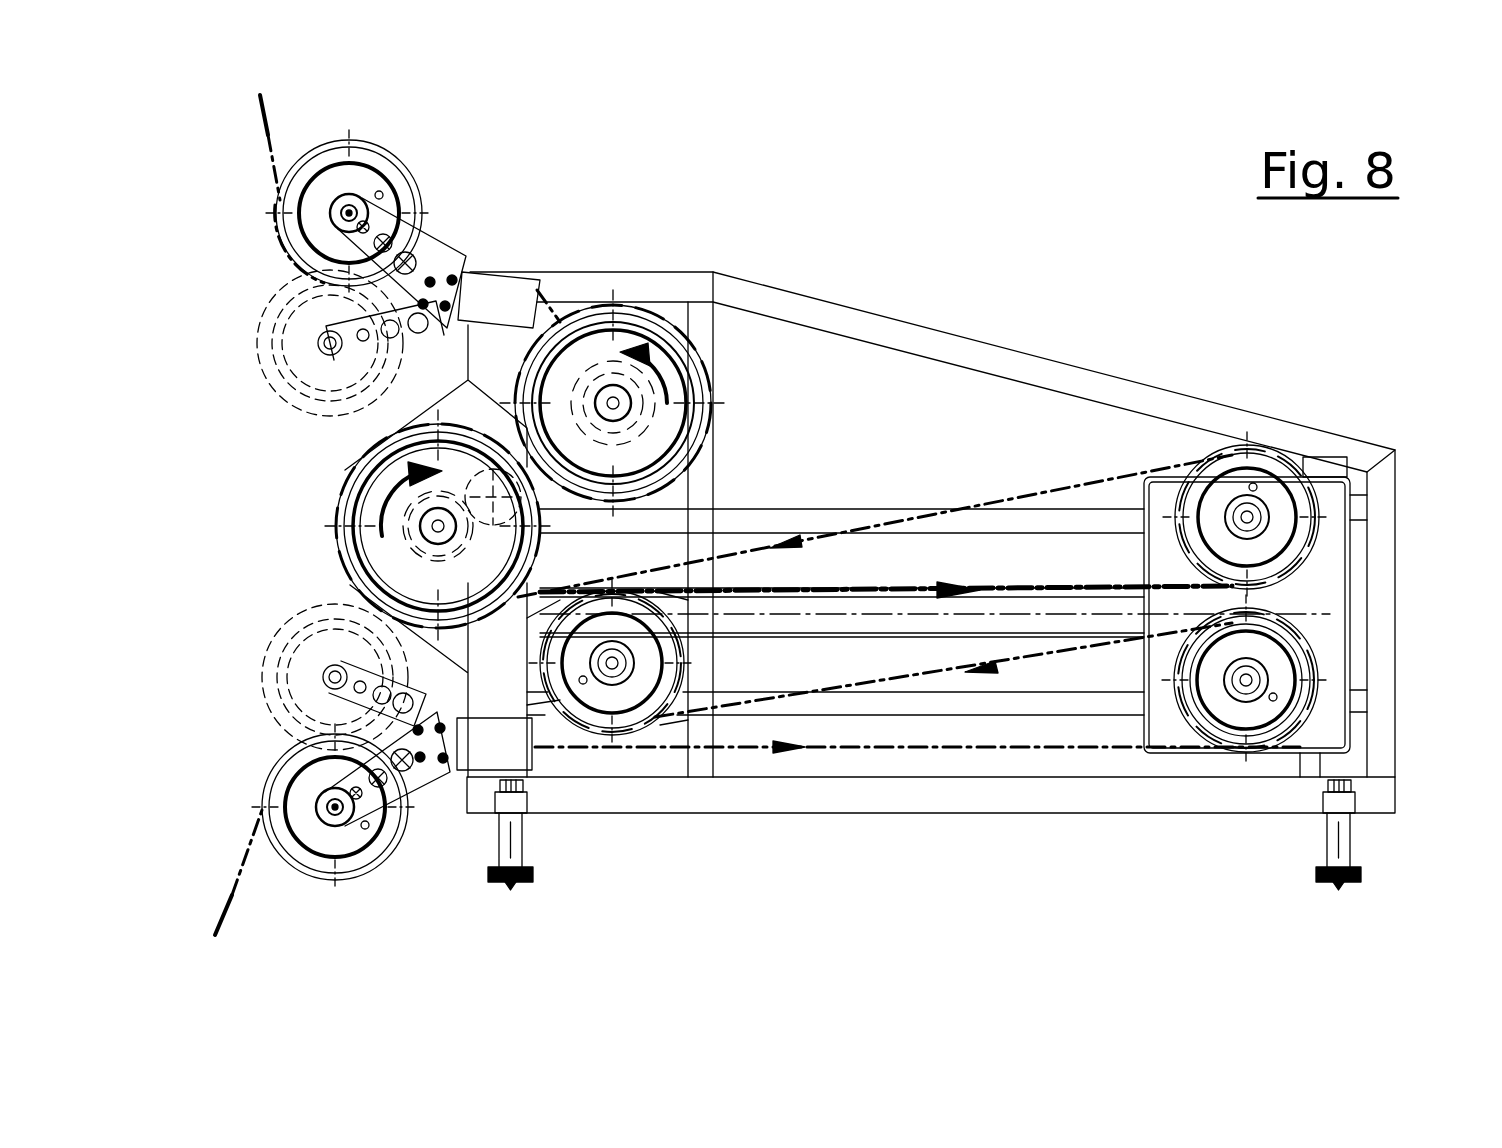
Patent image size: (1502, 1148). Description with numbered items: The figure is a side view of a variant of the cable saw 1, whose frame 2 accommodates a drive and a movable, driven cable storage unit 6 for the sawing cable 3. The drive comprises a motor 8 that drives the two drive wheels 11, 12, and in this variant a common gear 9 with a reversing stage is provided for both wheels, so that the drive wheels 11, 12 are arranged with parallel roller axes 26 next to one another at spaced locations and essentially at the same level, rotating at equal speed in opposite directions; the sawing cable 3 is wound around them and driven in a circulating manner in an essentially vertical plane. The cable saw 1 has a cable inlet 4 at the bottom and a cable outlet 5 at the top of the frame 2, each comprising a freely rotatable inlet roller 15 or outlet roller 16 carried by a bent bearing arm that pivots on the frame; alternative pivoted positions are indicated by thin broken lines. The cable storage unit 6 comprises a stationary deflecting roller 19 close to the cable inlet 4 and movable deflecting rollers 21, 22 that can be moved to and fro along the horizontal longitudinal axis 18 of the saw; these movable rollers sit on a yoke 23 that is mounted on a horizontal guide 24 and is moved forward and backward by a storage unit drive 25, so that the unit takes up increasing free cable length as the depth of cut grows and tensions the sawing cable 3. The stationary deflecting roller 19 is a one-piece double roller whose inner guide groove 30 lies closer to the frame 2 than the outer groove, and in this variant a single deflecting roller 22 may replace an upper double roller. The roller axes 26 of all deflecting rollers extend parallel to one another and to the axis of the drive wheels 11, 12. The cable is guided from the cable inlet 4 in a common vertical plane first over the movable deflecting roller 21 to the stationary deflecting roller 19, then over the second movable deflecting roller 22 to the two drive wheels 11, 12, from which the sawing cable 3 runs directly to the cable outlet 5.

The cable saw 1 is at (925, 266).
The frame 2 is at (788, 800).
The sawing cable 3 is at (265, 137).
The cable inlet 4 is at (395, 838).
The cable outlet 5 is at (398, 183).
The cable storage unit 6 is at (993, 483).
The motor 8 is at (640, 458).
The gear 9 is at (613, 403).
The drive wheel 11 is at (355, 487).
The drive wheel 12 is at (638, 330).
The inlet roller 15 is at (397, 715).
The outlet roller 16 is at (262, 347).
The horizontal longitudinal axis 18 is at (900, 615).
The stationary deflecting roller 19 is at (633, 693).
The movable deflecting roller 21 is at (1226, 697).
The deflecting roller 22 is at (1272, 490).
The yoke 23 is at (1327, 663).
The horizontal guide 24 is at (1032, 702).
The storage unit drive 25 is at (842, 612).
The roller axes 26 is at (430, 530).
The inner guide groove 30 is at (598, 727).